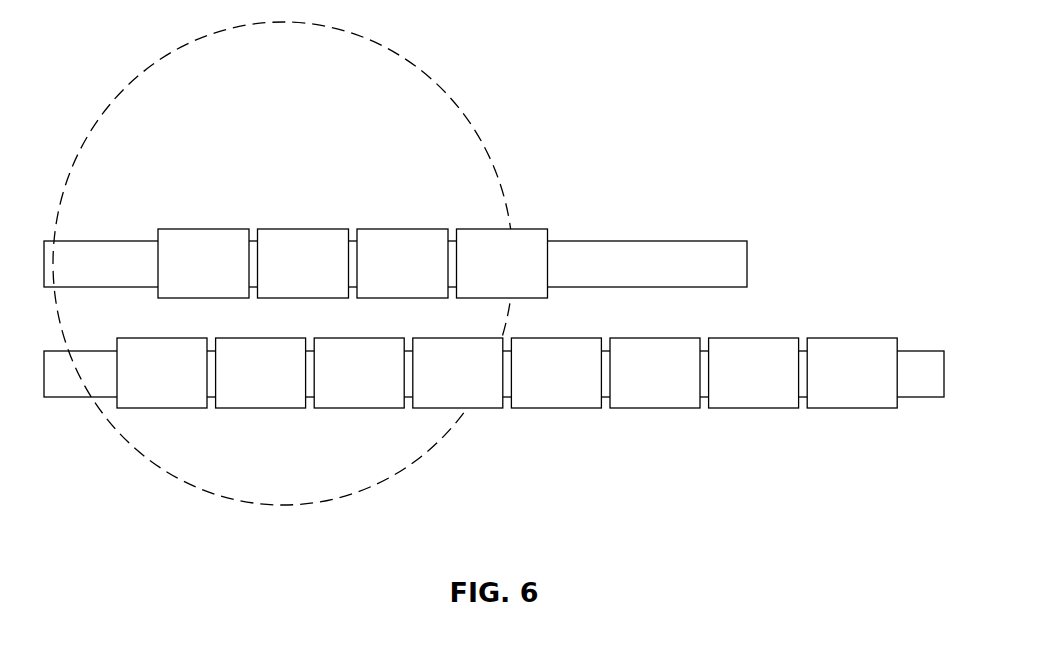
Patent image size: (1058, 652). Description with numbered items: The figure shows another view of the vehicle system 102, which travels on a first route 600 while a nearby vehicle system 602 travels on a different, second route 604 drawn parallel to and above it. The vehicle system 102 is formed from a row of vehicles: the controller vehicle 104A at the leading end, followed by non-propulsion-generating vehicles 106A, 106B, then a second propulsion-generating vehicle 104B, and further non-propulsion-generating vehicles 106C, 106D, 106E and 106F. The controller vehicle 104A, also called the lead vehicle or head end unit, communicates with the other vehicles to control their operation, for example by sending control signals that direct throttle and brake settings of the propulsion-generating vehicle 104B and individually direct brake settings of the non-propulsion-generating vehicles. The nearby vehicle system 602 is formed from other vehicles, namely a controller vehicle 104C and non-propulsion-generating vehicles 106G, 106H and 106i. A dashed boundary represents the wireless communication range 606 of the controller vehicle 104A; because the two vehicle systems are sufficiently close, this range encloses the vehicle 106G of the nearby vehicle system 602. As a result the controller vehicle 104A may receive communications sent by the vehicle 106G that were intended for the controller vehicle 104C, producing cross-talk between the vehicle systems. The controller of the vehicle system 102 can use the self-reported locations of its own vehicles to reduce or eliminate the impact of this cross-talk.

The first route 600 is at (918, 362).
The nearby vehicle system 602 is at (157, 211).
The second route 604 is at (688, 262).
The wireless communication range 606 is at (458, 105).
The vehicle system 102 is at (118, 428).
The controller vehicle 104A is at (129, 388).
The propulsion-generating vehicle 104B is at (491, 388).
The controller vehicle of nearby vehicle system 104C is at (171, 279).
The non-propulsion-generating vehicle 106A is at (294, 388).
The non-propulsion-generating vehicle 106B is at (326, 388).
The non-propulsion-generating vehicle 106C is at (590, 388).
The non-propulsion-generating vehicle 106D is at (621, 388).
The non-propulsion-generating vehicle 106E is at (721, 388).
The non-propulsion-generating vehicle 106F is at (884, 388).
The non-propulsion-generating vehicle of nearby vehicle system 106G is at (269, 279).
The non-propulsion-generating vehicle of nearby vehicle system 106H is at (368, 279).
The non-propulsion-generating vehicle of nearby vehicle system 106i is at (474, 279).